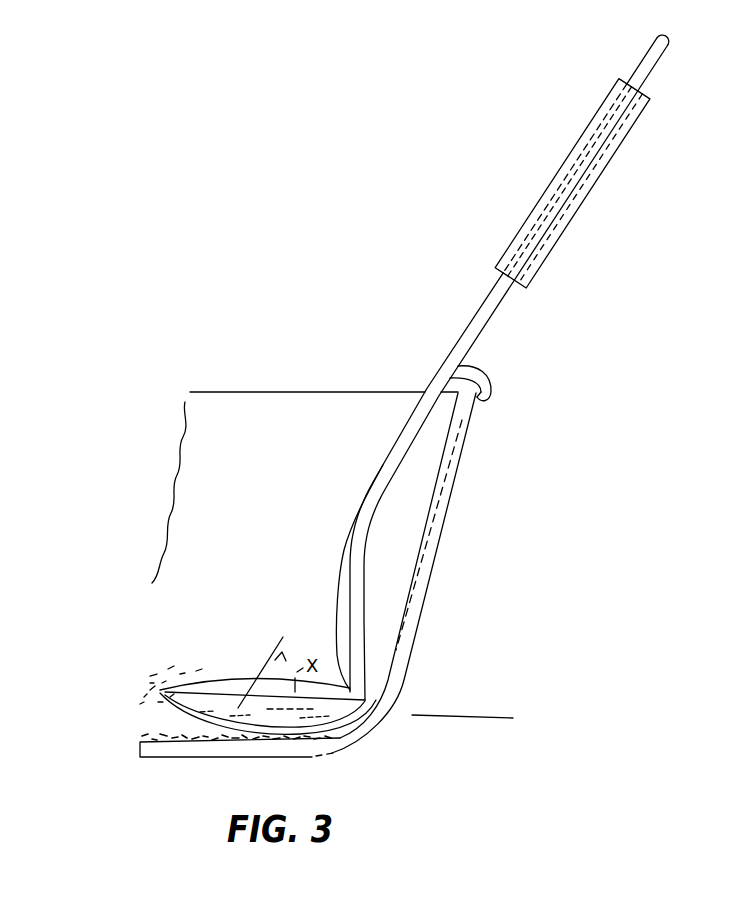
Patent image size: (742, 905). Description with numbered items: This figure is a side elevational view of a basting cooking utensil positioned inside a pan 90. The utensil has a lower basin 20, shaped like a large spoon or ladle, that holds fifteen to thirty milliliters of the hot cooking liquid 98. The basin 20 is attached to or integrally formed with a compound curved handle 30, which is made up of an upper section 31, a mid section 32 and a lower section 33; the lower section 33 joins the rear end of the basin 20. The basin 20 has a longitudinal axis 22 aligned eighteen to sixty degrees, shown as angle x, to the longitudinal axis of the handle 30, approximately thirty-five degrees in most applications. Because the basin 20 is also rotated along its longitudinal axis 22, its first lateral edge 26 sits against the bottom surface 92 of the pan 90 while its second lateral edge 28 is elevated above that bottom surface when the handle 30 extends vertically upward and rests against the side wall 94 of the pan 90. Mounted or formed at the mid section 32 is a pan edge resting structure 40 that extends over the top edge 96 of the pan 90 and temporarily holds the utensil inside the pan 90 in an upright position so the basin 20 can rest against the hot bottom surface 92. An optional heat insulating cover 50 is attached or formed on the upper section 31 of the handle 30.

The lower basin 20 is at (160, 689).
The longitudinal axis 22 is at (468, 715).
The first lateral edge 26 is at (203, 690).
The second lateral edge 28 is at (242, 678).
The compound curved handle 30 is at (467, 326).
The upper section 31 is at (620, 82).
The mid section 32 is at (428, 384).
The lower section 33 is at (361, 505).
The pan edge resting structure 40 is at (485, 381).
The heat insulating cover 50 is at (647, 73).
The pan 90 is at (198, 388).
The bottom surface 92 is at (177, 757).
The side wall 94 is at (421, 594).
The top edge 96 is at (476, 402).
The hot cooking liquid 98 is at (140, 733).